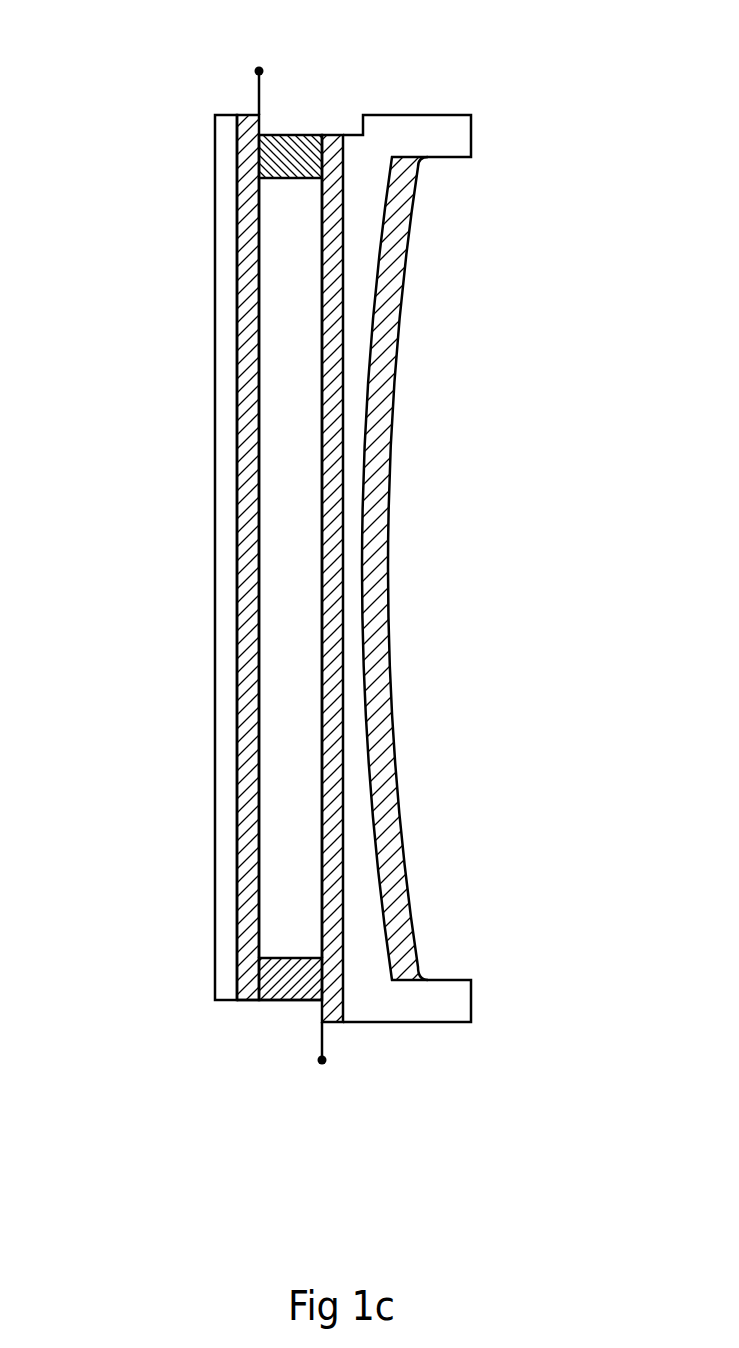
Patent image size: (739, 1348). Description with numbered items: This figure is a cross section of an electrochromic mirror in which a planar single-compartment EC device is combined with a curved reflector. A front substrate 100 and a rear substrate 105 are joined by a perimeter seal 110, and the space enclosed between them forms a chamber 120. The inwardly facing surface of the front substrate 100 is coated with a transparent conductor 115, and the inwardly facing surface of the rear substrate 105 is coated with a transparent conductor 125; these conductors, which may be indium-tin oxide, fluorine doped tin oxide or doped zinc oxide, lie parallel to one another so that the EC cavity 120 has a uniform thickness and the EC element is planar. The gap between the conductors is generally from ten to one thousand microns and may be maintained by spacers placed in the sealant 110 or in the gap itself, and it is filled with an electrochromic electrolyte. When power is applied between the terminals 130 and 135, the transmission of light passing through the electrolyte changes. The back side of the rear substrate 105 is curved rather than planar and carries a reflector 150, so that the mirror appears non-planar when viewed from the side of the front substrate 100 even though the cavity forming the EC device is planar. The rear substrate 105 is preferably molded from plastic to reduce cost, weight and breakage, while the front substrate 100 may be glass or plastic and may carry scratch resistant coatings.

The substrate 100 is at (223, 970).
The substrate 105 is at (440, 1012).
The perimeter seal 110 is at (290, 157).
The transparent conductor 115 is at (252, 538).
The chamber 120 is at (273, 675).
The transparent conductor 125 is at (332, 507).
The terminal 130 is at (300, 1077).
The terminal 135 is at (228, 68).
The reflector 150 is at (377, 728).